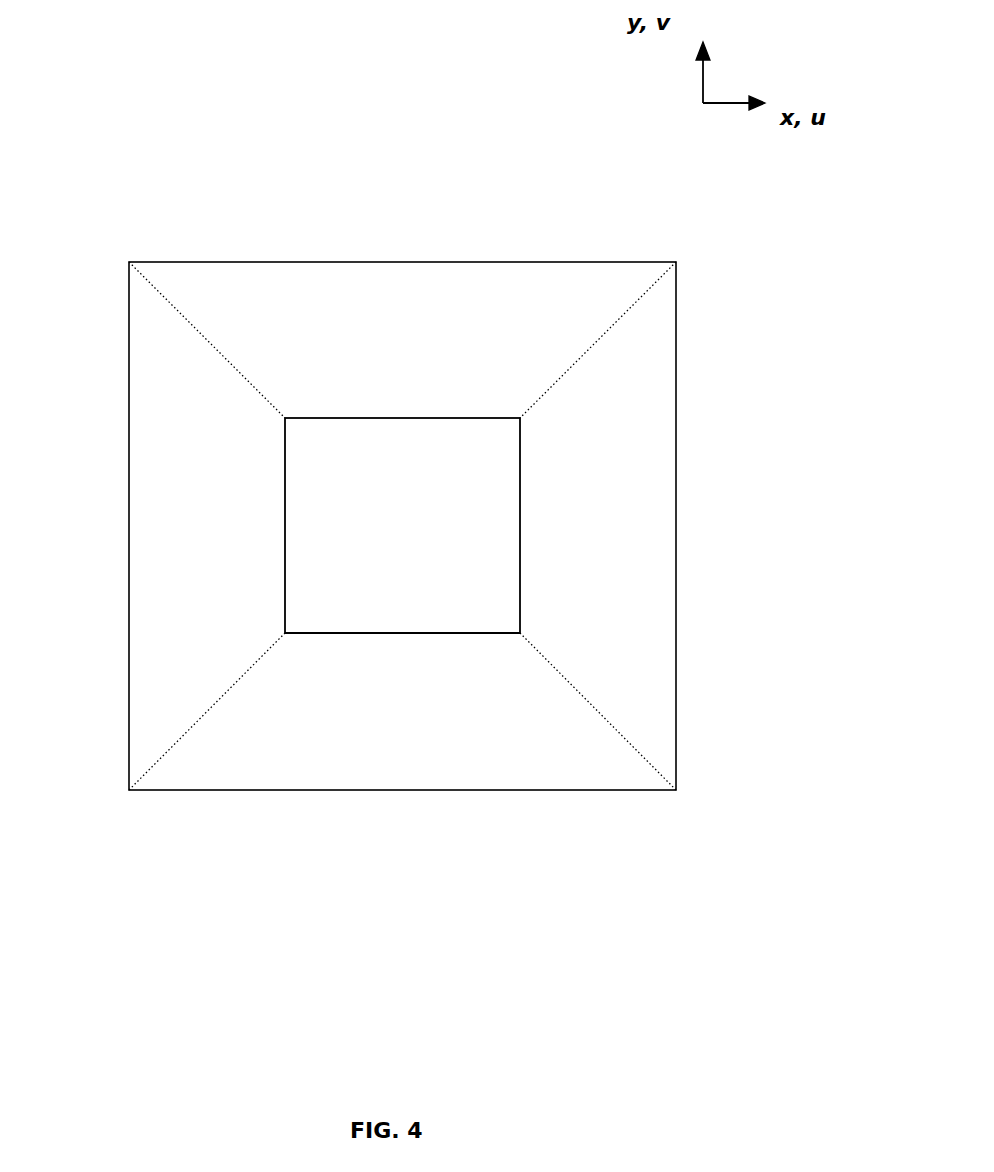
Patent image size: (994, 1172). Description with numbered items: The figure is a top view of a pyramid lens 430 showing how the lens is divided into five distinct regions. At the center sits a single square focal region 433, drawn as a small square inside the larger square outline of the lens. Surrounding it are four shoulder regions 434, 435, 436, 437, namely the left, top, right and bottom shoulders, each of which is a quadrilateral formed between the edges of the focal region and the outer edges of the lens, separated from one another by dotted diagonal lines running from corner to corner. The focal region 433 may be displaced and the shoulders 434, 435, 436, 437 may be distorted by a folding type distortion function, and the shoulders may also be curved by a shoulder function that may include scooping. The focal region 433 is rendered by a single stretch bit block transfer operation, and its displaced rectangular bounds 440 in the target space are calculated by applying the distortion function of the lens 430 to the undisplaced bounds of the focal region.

The pyramid lens 430 is at (414, 61).
The focal region 433 is at (330, 557).
The shoulder region 434 is at (158, 402).
The shoulder region 435 is at (360, 292).
The shoulder region 436 is at (612, 604).
The shoulder region 437 is at (549, 761).
The displaced rectangular bounds 440 is at (331, 636).